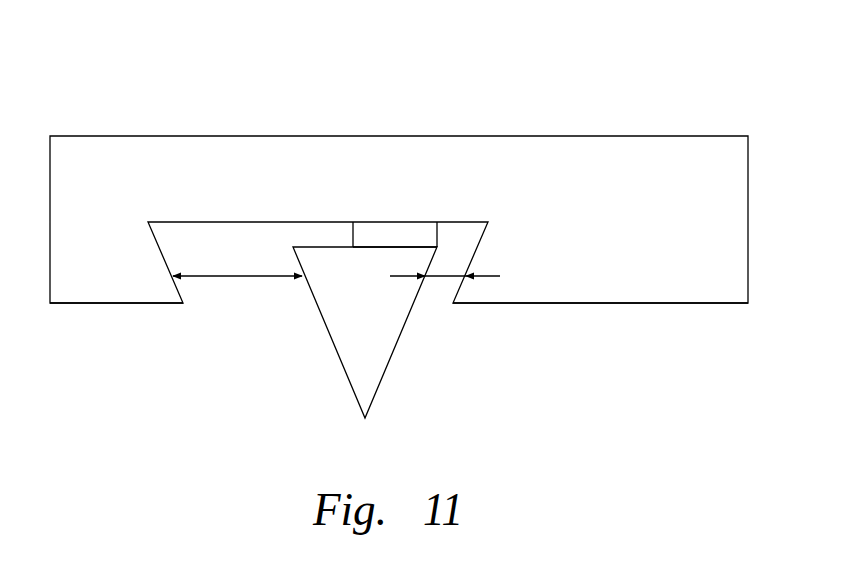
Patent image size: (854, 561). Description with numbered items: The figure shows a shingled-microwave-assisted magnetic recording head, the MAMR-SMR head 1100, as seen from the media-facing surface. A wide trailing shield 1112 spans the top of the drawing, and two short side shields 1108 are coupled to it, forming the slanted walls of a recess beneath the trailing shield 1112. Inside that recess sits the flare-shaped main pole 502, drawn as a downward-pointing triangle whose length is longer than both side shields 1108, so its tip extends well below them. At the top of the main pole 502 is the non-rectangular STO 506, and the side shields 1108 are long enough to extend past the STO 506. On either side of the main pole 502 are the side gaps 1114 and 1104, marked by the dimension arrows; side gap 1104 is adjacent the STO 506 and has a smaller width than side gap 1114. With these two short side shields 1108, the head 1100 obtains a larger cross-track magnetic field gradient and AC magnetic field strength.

The MAMR-SMR head 1100 is at (150, 43).
The trailing shield 1112 is at (84, 140).
The short side shields 1108 is at (110, 293).
The non-rectangular STO 506 is at (395, 232).
The flare-shaped main pole 502 is at (352, 369).
The side gap 1114 is at (227, 276).
The side gap 1104 is at (443, 276).